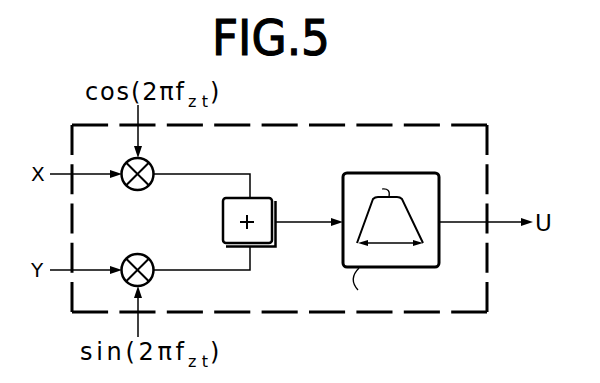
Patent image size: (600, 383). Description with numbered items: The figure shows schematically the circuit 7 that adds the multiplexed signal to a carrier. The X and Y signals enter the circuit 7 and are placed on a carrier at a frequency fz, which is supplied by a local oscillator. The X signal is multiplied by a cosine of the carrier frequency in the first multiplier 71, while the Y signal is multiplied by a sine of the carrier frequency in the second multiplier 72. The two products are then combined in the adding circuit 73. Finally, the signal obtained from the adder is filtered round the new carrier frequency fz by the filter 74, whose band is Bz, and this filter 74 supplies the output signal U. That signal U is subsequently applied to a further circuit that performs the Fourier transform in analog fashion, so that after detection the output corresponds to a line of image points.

The circuit 7 is at (316, 124).
The multiplier 71 is at (146, 159).
The multiplier 72 is at (148, 258).
The adding circuit 73 is at (271, 197).
The filter 74 is at (387, 172).